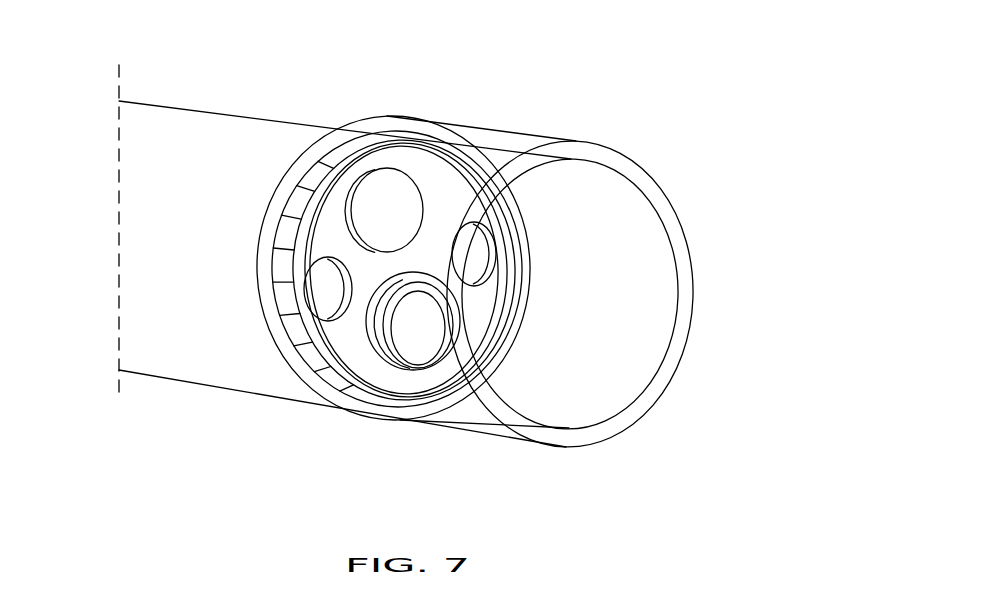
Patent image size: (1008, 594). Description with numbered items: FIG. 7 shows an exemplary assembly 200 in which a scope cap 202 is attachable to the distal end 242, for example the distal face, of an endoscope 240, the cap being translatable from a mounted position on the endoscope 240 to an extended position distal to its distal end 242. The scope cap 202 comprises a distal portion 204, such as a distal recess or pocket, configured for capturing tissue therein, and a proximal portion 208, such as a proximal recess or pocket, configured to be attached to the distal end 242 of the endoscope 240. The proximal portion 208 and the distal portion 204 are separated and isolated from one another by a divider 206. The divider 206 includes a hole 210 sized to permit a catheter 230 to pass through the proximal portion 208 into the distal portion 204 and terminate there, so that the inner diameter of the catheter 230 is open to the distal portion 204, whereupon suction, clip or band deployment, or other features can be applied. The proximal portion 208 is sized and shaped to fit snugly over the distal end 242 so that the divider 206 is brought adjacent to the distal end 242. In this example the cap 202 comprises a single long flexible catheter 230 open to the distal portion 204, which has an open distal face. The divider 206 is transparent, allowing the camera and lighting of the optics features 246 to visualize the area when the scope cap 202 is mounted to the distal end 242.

The assembly 200 is at (748, 98).
The scope cap 202 is at (530, 122).
The distal portion 204 is at (638, 265).
The divider 206 is at (352, 332).
The proximal portion 208 is at (353, 126).
The hole 210 is at (425, 327).
The catheter 230 is at (413, 348).
The endoscope 240 is at (153, 225).
The distal end 242 is at (340, 243).
The optics features 246 is at (388, 208).